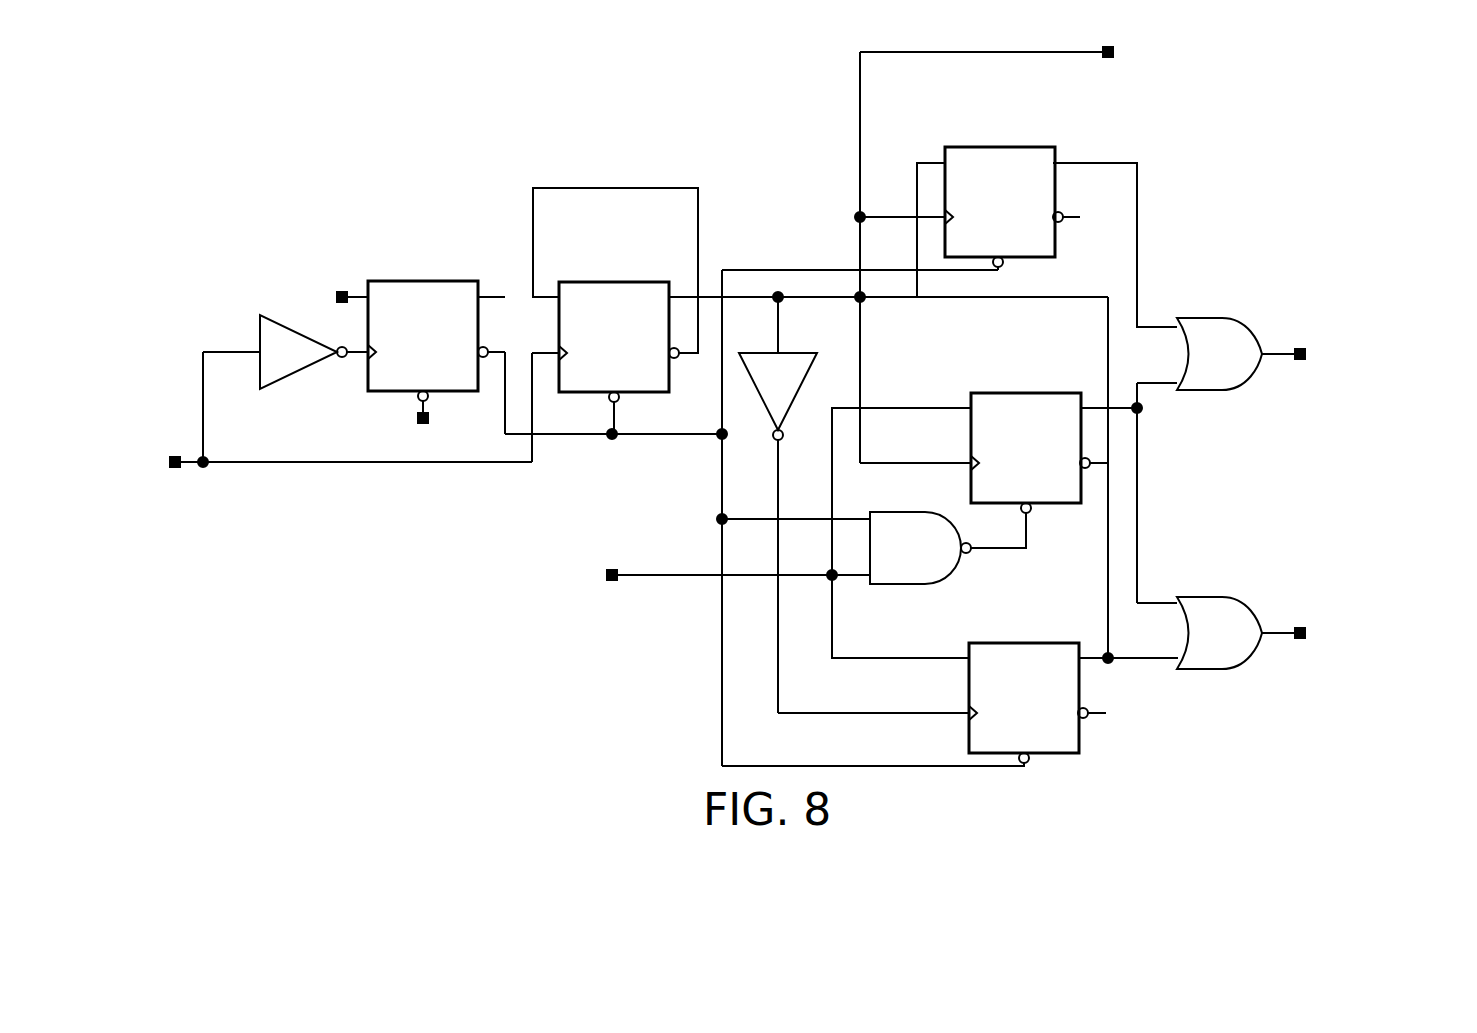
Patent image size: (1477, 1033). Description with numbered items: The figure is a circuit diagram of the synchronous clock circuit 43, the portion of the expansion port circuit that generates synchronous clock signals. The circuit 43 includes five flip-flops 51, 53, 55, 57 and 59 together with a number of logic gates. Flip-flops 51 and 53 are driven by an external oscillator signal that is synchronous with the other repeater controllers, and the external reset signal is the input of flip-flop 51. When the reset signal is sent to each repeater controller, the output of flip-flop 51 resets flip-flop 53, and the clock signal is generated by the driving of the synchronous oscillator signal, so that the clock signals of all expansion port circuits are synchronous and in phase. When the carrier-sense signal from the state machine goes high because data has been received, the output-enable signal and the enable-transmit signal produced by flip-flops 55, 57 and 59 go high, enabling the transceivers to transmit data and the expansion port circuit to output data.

The SYNCLK circuit 43 is at (306, 133).
The flip-flop 51 is at (425, 281).
The flip-flop 53 is at (615, 282).
The flip-flop 55 is at (1000, 147).
The flip-flop 57 is at (1025, 393).
The flip-flop 59 is at (1027, 643).